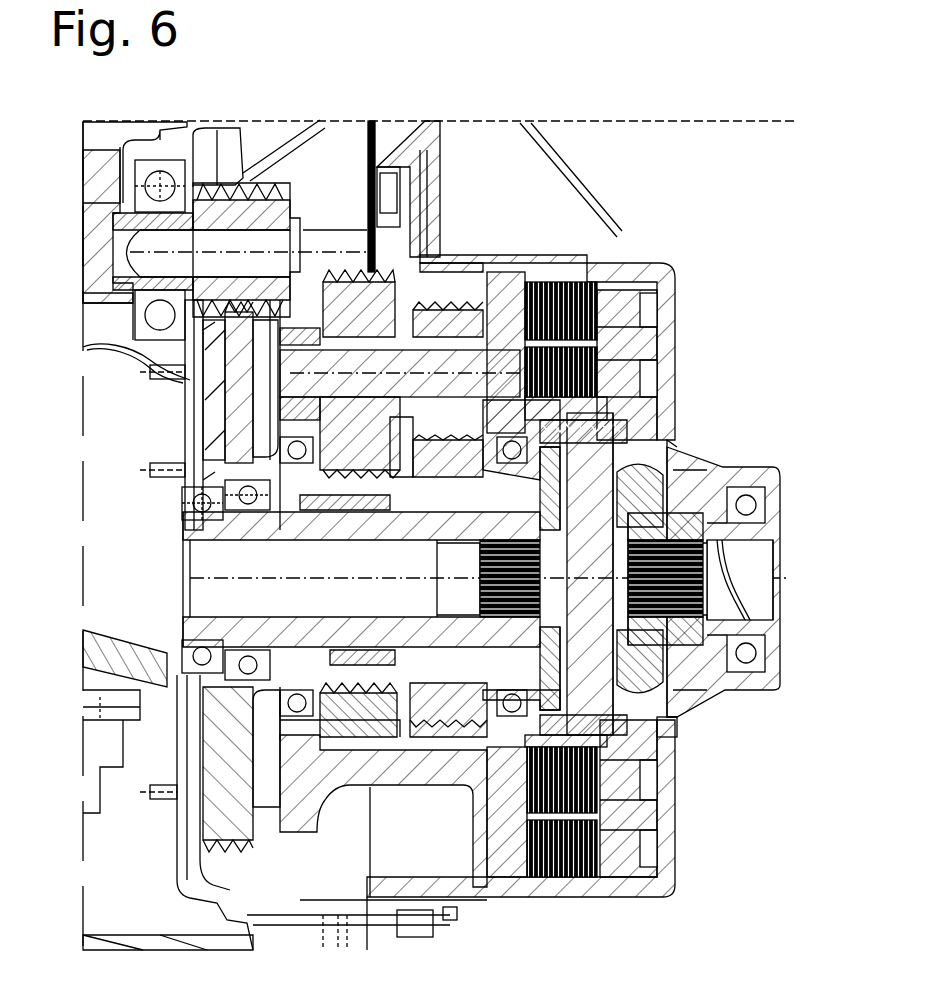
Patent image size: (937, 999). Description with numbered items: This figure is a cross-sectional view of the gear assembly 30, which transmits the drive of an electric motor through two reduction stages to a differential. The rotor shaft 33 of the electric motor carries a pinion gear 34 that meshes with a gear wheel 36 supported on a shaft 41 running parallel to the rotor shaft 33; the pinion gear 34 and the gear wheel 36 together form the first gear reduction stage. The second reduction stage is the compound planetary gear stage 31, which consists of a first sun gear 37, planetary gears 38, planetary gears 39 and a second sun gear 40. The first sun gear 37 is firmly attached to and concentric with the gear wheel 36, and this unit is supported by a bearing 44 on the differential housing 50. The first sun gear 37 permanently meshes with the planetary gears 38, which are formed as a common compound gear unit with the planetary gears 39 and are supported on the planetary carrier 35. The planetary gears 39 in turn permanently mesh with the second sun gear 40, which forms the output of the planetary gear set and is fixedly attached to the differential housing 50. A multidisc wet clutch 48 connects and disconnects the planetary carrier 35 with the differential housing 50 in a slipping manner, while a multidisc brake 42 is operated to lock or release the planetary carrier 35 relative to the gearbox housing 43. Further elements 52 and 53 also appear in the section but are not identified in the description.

The gear assembly 30 is at (740, 157).
The compound planetary gear stage 31 is at (498, 217).
The rotor shaft 33 is at (155, 246).
The pinion gear 34 is at (218, 182).
The planetary carrier 35 is at (470, 307).
The gear wheel 36 is at (173, 377).
The first sun gear 37 is at (232, 460).
The planetary gears 38 is at (347, 272).
The planetary gears 39 is at (427, 307).
The second sun gear 40 is at (440, 462).
The shaft 41 is at (205, 528).
The multidisc brake 42 is at (583, 262).
The gearbox housing 43 is at (422, 150).
The bearing 44 is at (240, 482).
The multidisc wet clutch 48 is at (655, 378).
The differential housing 50 is at (667, 450).
The bearing seal 52 is at (710, 588).
The output shaft 53 is at (203, 603).